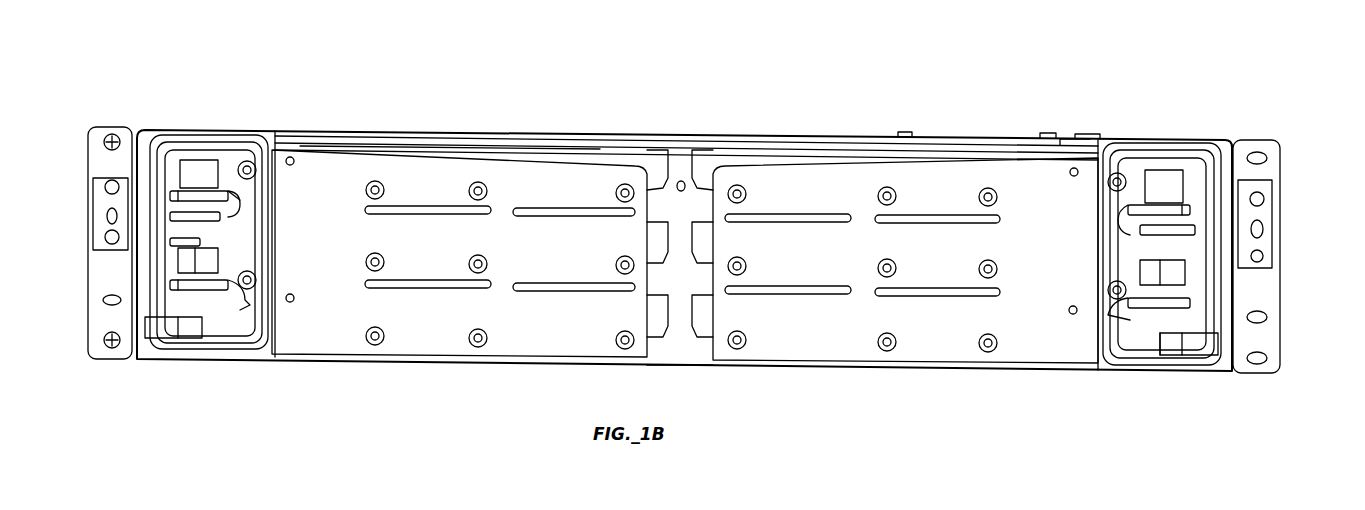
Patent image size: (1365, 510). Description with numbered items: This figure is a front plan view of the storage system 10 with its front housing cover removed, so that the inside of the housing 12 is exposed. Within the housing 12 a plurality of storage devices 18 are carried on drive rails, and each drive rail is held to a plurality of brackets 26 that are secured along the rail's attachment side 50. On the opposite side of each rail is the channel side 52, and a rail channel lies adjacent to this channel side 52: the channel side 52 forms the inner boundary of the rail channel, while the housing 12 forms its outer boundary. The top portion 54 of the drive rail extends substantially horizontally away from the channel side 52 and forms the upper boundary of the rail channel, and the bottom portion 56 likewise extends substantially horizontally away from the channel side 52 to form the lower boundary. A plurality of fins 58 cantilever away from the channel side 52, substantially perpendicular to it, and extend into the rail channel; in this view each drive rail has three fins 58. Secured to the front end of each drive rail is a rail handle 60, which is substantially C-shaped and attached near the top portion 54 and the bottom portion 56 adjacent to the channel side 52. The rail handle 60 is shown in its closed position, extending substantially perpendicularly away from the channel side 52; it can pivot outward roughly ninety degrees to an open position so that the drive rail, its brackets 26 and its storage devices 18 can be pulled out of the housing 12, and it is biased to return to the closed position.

The storage system 10 is at (1012, 58).
The housing 12 is at (1281, 170).
The storage devices 18 is at (647, 172).
The brackets 26 is at (328, 168).
The attachment side 50 is at (252, 192).
The channel side 52 is at (217, 250).
The top portion 54 is at (228, 201).
The bottom portion 56 is at (167, 362).
The fins 58 is at (1170, 265).
The rail handle 60 is at (1200, 373).